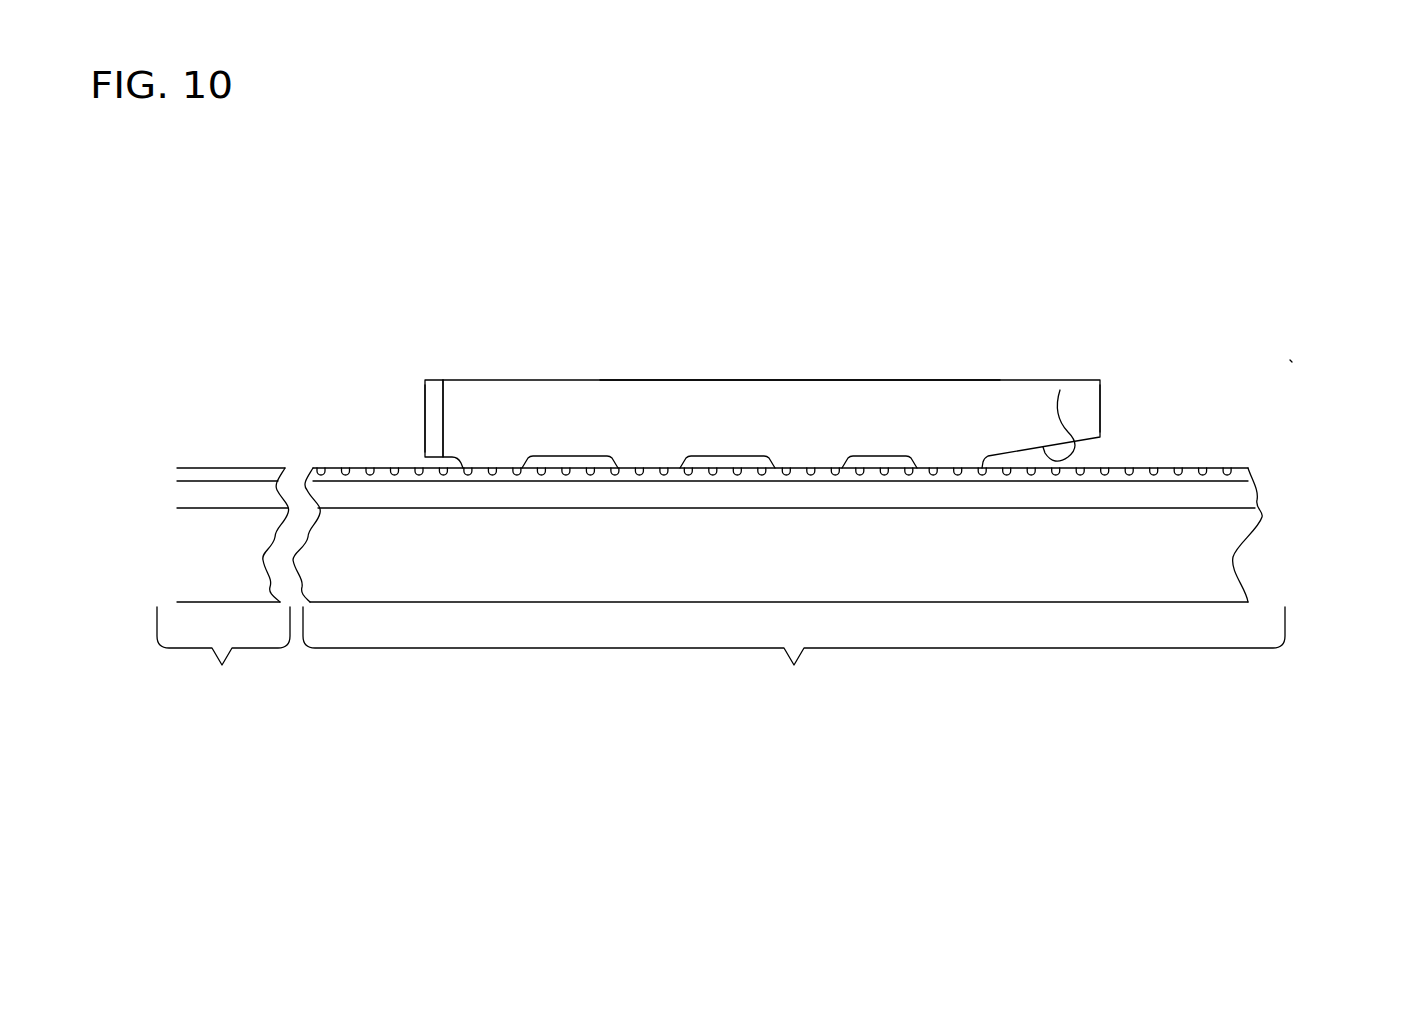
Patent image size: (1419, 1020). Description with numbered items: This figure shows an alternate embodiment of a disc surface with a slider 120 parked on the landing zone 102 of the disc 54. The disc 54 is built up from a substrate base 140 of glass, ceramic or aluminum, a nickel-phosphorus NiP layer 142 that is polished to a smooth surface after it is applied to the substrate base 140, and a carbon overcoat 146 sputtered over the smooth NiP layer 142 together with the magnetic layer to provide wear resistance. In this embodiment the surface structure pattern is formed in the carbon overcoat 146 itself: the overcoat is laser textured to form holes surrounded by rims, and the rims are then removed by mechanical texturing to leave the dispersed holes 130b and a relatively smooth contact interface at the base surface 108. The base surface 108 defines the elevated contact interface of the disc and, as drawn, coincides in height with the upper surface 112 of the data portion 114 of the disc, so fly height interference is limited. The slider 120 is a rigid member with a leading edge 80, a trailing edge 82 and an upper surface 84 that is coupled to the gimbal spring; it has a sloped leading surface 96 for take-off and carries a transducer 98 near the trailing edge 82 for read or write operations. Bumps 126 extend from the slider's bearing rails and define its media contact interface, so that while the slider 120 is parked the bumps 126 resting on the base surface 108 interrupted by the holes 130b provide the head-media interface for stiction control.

The disc 54 is at (1287, 355).
The leading edge 80 is at (1100, 413).
The trailing edge 82 is at (423, 395).
The upper surface 84 is at (923, 378).
The sloped leading surface 96 is at (1060, 390).
The transducer 98 is at (430, 378).
The landing zone 102 is at (841, 525).
The base surface 108 is at (357, 467).
The upper surface of data portion 112 is at (205, 468).
The data portion 114 is at (223, 654).
The slider 120 is at (760, 325).
The bumps 126 is at (483, 462).
The holes 130b is at (1223, 468).
The substrate base 140 is at (1223, 570).
The NiP layer 142 is at (1247, 497).
The carbon overcoat 146 is at (1247, 475).